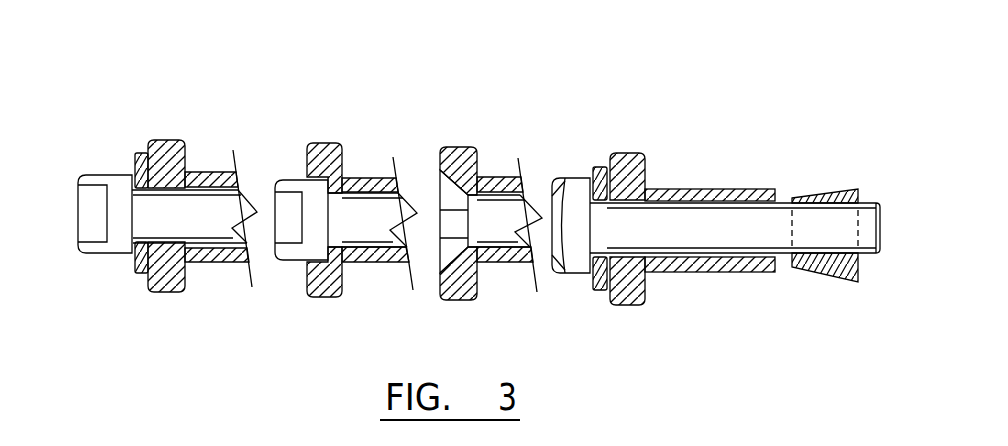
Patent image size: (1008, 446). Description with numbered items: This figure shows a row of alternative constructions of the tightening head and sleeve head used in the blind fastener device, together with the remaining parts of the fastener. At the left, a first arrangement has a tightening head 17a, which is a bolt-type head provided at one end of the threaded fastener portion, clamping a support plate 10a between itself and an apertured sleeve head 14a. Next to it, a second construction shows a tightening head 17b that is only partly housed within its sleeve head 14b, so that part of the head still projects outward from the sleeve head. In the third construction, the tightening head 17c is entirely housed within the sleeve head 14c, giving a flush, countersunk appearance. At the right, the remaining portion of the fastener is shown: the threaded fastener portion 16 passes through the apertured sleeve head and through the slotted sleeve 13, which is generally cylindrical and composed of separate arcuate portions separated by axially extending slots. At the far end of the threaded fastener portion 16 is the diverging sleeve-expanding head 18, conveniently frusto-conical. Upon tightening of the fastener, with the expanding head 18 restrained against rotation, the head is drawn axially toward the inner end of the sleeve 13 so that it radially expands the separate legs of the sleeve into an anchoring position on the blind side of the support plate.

The tightening head 17a is at (99, 176).
The support plate 10a is at (140, 155).
The sleeve head 14a is at (173, 147).
The tightening head 17b is at (290, 183).
The sleeve head 14b is at (330, 152).
The tightening head 17c is at (443, 193).
The sleeve head 14c is at (470, 148).
The slotted sleeve 13 is at (730, 193).
The sleeve-expanding head 18 is at (833, 193).
The threaded fastener portion 16 is at (868, 225).